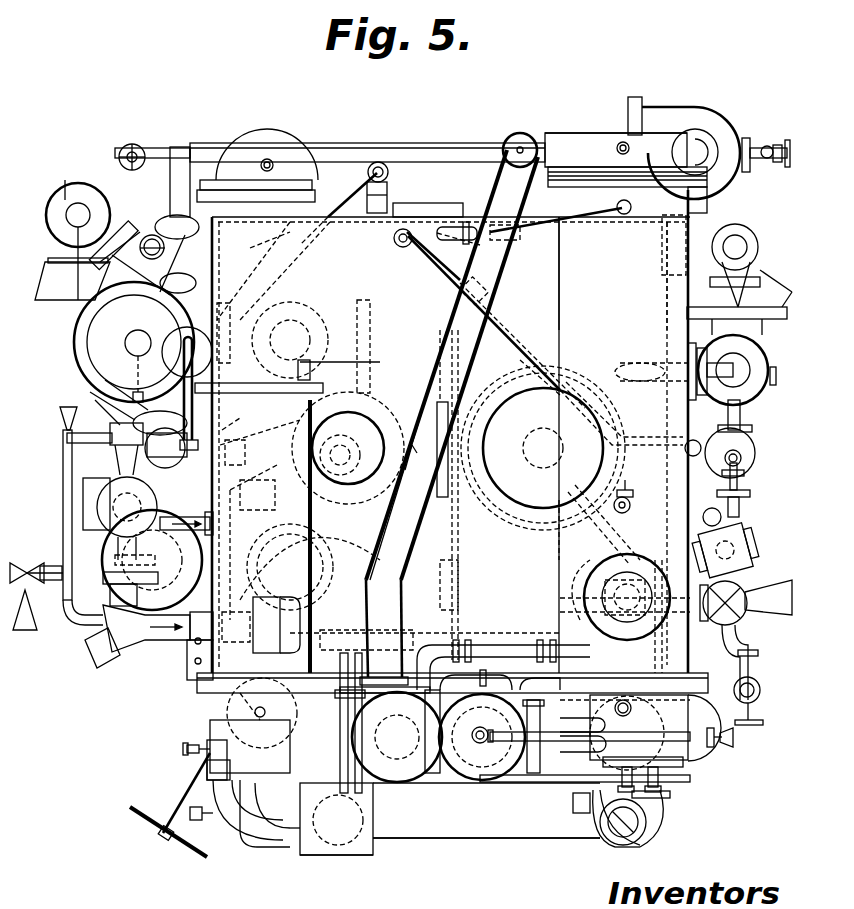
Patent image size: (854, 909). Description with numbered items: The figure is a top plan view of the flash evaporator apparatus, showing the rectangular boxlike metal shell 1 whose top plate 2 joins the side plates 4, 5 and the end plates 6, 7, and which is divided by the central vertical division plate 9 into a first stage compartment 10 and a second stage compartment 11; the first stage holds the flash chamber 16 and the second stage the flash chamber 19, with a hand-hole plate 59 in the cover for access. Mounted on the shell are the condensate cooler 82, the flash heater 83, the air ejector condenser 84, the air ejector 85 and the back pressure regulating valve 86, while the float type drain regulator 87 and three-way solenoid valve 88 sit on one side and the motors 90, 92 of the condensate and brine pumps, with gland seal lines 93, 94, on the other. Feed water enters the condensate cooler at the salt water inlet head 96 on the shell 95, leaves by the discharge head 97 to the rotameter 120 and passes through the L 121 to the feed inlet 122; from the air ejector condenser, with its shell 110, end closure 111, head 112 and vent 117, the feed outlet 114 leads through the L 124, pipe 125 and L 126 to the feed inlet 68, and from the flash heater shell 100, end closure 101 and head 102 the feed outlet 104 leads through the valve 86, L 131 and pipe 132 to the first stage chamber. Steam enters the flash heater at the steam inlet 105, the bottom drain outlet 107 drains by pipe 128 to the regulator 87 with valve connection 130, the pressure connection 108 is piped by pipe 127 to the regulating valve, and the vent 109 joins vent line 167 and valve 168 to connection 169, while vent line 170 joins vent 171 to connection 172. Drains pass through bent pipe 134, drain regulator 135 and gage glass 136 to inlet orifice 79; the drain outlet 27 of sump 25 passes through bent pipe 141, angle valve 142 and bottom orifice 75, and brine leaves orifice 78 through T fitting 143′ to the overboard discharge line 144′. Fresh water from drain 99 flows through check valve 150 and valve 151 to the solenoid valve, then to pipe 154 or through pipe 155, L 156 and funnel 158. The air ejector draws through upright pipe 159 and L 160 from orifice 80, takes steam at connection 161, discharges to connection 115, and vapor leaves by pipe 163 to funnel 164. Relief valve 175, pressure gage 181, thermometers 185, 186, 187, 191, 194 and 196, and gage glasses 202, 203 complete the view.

The metal shell 1 is at (295, 226).
The top plate 2 is at (560, 360).
The side plate 4 is at (660, 292).
The side plate 5 is at (233, 420).
The end plate 6 is at (515, 676).
The end plate 7 is at (378, 220).
The central vertical division plate 9 is at (460, 545).
The first stage compartment 10 is at (640, 245).
The second stage compartment 11 is at (330, 215).
The flash chamber 16 is at (600, 235).
The flash chamber 19 is at (455, 592).
The first stage well or sump 25 is at (543, 446).
The drain outlet 27 is at (536, 448).
The hand-hole plate 59 is at (543, 470).
The feed inlet 68 is at (672, 792).
The bottom orifice 75 is at (449, 409).
The bottom outlet orifice 78 is at (300, 302).
The inlet orifice 79 is at (263, 252).
The air ejector orifice 80 is at (260, 427).
The condensate cooler 82 is at (390, 770).
The flash heater 83 is at (558, 300).
The air ejector condenser 84 is at (348, 444).
The air ejector 85 is at (197, 653).
The back pressure regulating valve 86 is at (450, 765).
The float type drain regulator 87 is at (760, 395).
The three-way solenoid valve 88 is at (745, 535).
The motor 90 is at (150, 520).
The motor 92 is at (90, 350).
The gland seal line 93 is at (215, 560).
The gland seal line 94 is at (100, 385).
The cylindrical metal shell 95 is at (505, 822).
The salt water inlet head 96 is at (600, 745).
The salt water discharge head 97 is at (252, 729).
The fresh water drain 99 is at (625, 608).
The cylindrical metal shell 100 is at (562, 530).
The end closure 101 is at (580, 133).
The head 102 is at (690, 750).
The feed outlet 104 is at (600, 725).
The steam inlet 105 is at (622, 582).
The bottom drain outlet 107 is at (668, 362).
The pressure connection 108 is at (660, 735).
The vent 109 is at (625, 205).
The cylindrical metal shell 110 is at (312, 443).
The end closure 111 is at (305, 365).
The head 112 is at (218, 703).
The feed outlet 114 is at (240, 820).
The air ejector connection 115 is at (262, 630).
The vent 117 is at (160, 439).
The rotameter 120 is at (338, 857).
The L 121 is at (235, 815).
The feed inlet 122 is at (205, 760).
The L 124 is at (270, 832).
The pipe 125 is at (425, 840).
The L 126 is at (655, 832).
The pipe 127 is at (482, 737).
The pipe 128 is at (690, 390).
The valve connection 130 is at (738, 250).
The L 131 is at (418, 752).
The pipe 132 is at (440, 355).
The bent pipe 134 is at (698, 145).
The drain regulator 135 is at (725, 180).
The gage glass 136 is at (767, 145).
The bent pipe 141 is at (340, 530).
The angle valve 142 is at (380, 605).
The T fitting 143′ is at (372, 320).
The brine overboard discharge line 144′ is at (72, 221).
The check valve 150 is at (470, 646).
The valve 151 is at (745, 620).
The pipe 154 is at (740, 497).
The pipe 155 is at (740, 478).
The L 156 is at (720, 455).
The funnel 158 is at (740, 455).
The upright pipe 159 is at (112, 468).
The L 160 is at (225, 440).
The connection 161 is at (33, 566).
The pipe 163 is at (185, 365).
The funnel 164 is at (143, 342).
The vent line 167 is at (560, 213).
The valve 168 is at (468, 232).
The second stage compartment connection 169 is at (438, 230).
The vent line 170 is at (559, 377).
The first stage compartment vent 171 is at (685, 447).
The second stage compartment connection 172 is at (400, 248).
The relief valve 175 is at (610, 516).
The pressure gage 181 is at (83, 507).
The thermometer 185 is at (185, 750).
The thermometer 186 is at (612, 828).
The thermometer 187 is at (665, 815).
The thermometer 191 is at (185, 840).
The thermometer 194 is at (735, 740).
The thermometer 196 is at (690, 618).
The gage glass 202 is at (740, 694).
The gage glass 203 is at (150, 240).